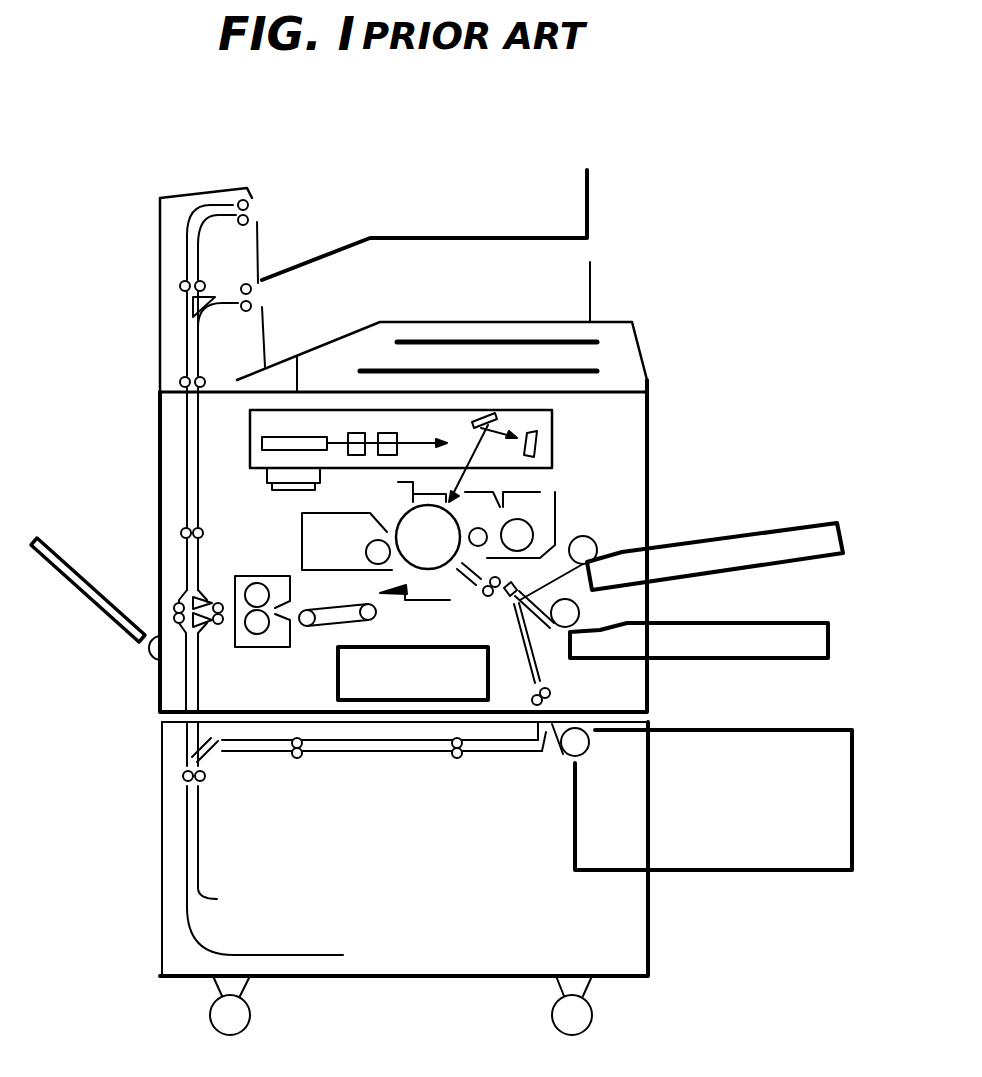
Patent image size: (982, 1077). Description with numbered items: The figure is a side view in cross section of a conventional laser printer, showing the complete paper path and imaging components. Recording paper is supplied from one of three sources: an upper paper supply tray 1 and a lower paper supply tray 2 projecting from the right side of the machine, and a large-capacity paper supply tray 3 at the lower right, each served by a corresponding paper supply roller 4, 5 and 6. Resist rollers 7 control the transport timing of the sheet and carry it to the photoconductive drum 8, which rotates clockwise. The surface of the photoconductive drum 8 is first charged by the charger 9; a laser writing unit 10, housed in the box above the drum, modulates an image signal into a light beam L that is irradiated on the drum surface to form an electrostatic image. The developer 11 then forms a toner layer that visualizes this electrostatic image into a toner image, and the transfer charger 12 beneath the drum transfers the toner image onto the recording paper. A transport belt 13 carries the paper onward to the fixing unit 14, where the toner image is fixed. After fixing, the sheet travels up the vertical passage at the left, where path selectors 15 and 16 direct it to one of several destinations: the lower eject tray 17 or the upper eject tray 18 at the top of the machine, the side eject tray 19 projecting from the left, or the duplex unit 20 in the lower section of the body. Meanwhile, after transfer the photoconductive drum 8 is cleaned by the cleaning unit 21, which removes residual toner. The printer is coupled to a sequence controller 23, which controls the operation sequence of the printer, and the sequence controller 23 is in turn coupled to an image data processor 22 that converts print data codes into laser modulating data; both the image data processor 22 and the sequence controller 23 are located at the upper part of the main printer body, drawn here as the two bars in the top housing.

The upper paper supply tray 1 is at (795, 538).
The lower paper supply tray 2 is at (786, 633).
The paper supply tray having a large capacity 3 is at (782, 737).
The paper supply roller 4 is at (595, 542).
The paper supply roller 5 is at (579, 613).
The paper supply roller 6 is at (589, 748).
The resist rollers 7 is at (490, 599).
The photoconductive drum 8 is at (428, 537).
The charger 9 is at (404, 494).
The laser writing unit 10 is at (552, 422).
The developer 11 is at (540, 492).
The transfer charger 12 is at (428, 600).
The transport belt 13 is at (325, 628).
The fixing unit 14 is at (268, 648).
The path selector 15 is at (196, 597).
The path selector 16 is at (192, 301).
The lower eject tray 17 is at (580, 285).
The upper eject tray 18 is at (580, 202).
The side eject tray 19 is at (65, 558).
The duplex unit 20 is at (182, 750).
The cleaning unit 21 is at (320, 548).
The image data processor 22 is at (597, 342).
The sequence controller 23 is at (597, 371).
The light beam L is at (486, 450).